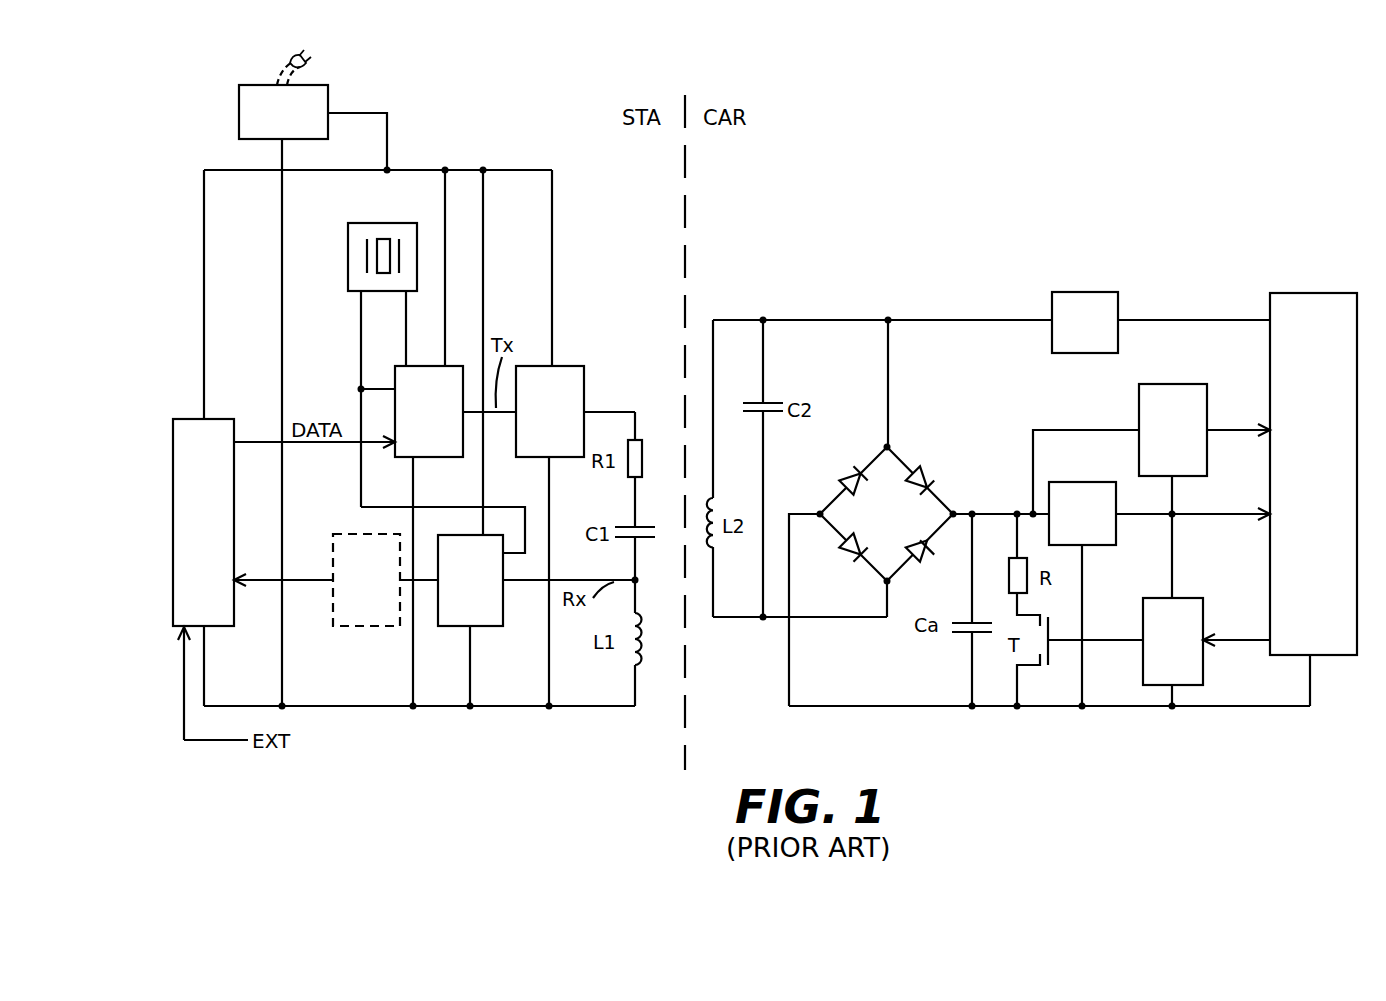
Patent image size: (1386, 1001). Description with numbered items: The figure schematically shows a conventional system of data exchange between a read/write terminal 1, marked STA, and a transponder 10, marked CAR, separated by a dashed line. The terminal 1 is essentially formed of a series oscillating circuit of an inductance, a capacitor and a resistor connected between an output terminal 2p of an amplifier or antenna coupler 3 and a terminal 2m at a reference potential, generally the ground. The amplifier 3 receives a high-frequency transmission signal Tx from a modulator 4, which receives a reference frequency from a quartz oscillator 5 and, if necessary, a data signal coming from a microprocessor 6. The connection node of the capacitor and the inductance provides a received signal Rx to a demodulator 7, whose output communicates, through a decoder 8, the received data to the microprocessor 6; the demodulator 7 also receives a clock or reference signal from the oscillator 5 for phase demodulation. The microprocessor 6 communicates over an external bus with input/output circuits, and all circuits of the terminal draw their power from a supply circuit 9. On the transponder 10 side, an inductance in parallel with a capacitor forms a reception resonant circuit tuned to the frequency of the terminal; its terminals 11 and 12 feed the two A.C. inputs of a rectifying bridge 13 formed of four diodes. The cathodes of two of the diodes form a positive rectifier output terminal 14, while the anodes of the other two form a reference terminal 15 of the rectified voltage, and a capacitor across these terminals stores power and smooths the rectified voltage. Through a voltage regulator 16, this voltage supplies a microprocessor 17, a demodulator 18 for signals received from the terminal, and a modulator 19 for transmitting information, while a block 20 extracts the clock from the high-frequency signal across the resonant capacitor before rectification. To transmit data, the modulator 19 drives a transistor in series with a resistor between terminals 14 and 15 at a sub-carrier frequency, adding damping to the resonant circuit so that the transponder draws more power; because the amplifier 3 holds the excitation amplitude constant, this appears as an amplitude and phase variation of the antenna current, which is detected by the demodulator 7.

The read/write terminal 1 is at (533, 123).
The output terminal of amplifier 2p is at (615, 410).
The reference potential terminal 2m is at (494, 707).
The amplifier or antenna coupler 3 is at (562, 365).
The modulator 4 is at (432, 458).
The quartz oscillator 5 is at (348, 223).
The microprocessor 6 is at (193, 419).
The demodulator 7 is at (480, 627).
The decoder 8 is at (350, 627).
The supply circuit 9 is at (328, 87).
The transponder 10 is at (939, 128).
The first terminal of resonant circuit 11 is at (764, 319).
The second terminal of resonant circuit 12 is at (762, 619).
The rectifying bridge 13 is at (885, 516).
The positive rectifier output terminal 14 is at (973, 512).
The reference terminal of rectified voltage 15 is at (920, 707).
The voltage regulator 16 is at (1100, 546).
The microprocessor 17 is at (1292, 293).
The demodulator 18 is at (1185, 384).
The modulator 19 is at (1185, 598).
The clock extraction block 20 is at (1100, 292).